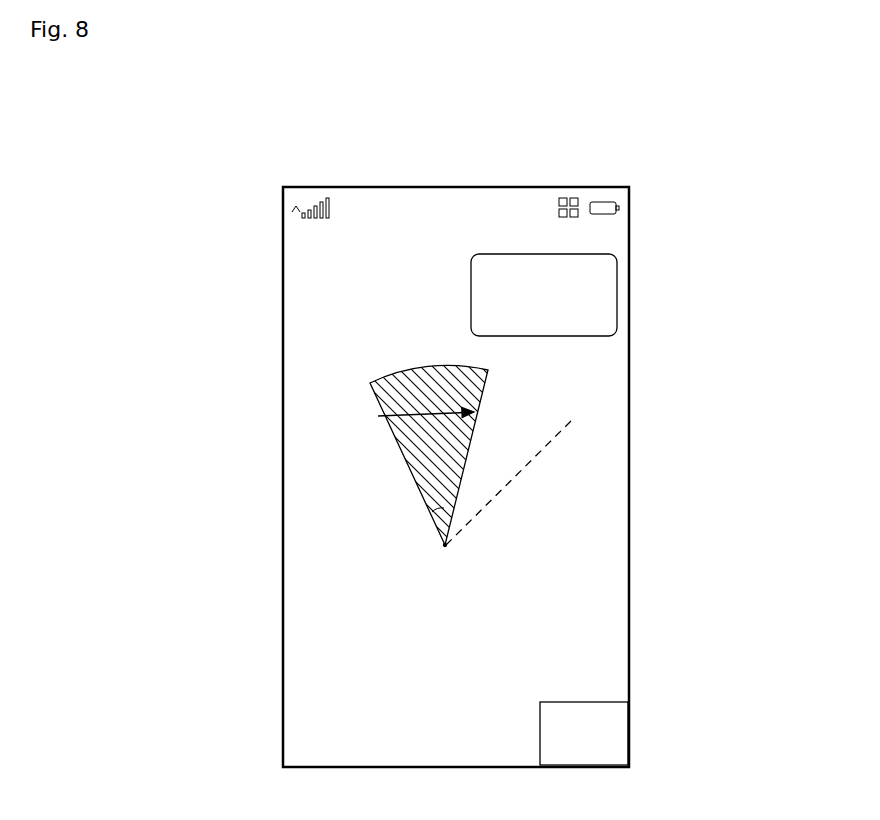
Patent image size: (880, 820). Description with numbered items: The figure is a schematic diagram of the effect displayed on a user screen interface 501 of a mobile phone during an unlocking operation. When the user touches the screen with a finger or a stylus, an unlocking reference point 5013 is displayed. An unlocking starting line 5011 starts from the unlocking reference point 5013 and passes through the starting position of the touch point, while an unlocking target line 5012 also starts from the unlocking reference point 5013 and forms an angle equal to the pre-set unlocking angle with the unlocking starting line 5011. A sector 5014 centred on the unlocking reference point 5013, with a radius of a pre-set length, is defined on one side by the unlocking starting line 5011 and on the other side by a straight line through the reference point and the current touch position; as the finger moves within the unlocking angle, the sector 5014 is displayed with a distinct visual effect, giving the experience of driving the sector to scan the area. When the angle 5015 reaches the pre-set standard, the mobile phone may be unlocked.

The terminal display screen 501 is at (360, 240).
The unlocking starting line 5011 is at (388, 420).
The unlocking target line 5012 is at (472, 412).
The unlocking reference point 5013 is at (443, 543).
The sector 5014 is at (407, 462).
The angle 5015 is at (473, 522).